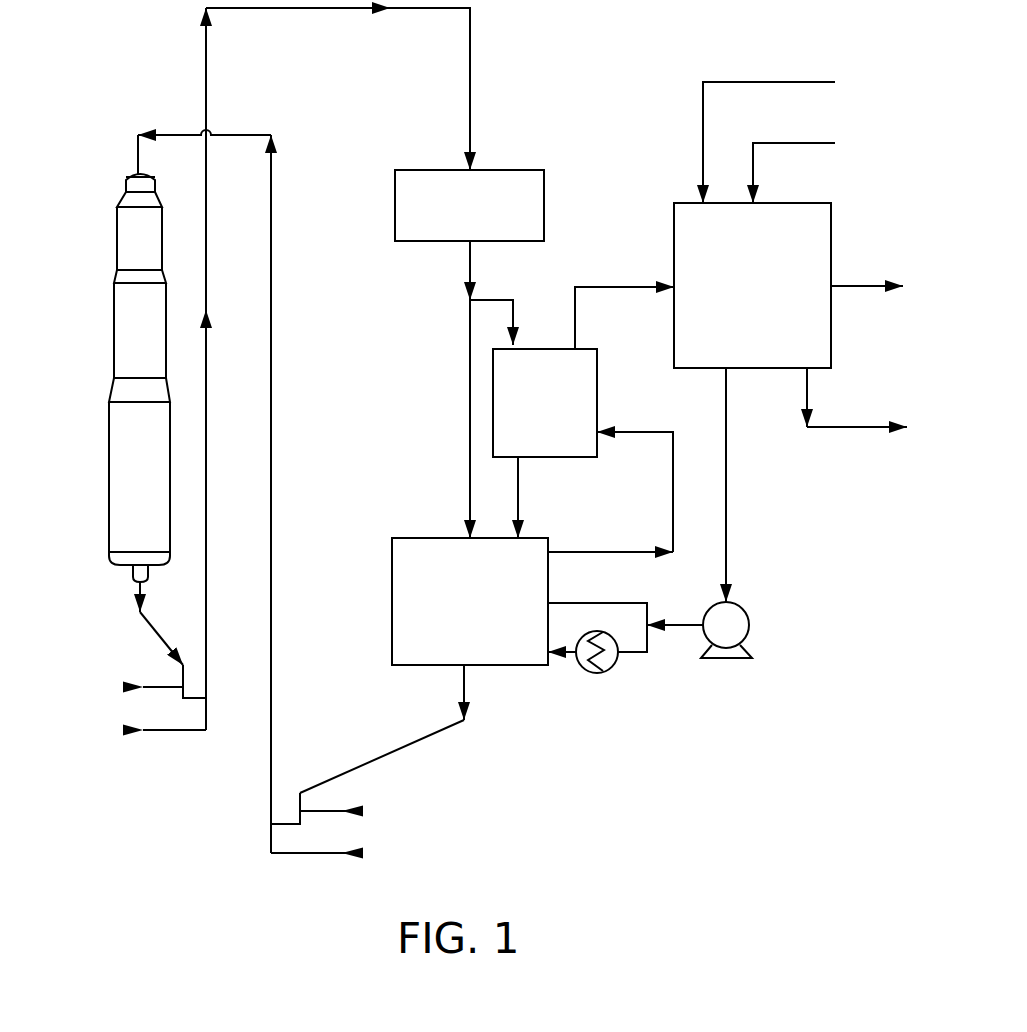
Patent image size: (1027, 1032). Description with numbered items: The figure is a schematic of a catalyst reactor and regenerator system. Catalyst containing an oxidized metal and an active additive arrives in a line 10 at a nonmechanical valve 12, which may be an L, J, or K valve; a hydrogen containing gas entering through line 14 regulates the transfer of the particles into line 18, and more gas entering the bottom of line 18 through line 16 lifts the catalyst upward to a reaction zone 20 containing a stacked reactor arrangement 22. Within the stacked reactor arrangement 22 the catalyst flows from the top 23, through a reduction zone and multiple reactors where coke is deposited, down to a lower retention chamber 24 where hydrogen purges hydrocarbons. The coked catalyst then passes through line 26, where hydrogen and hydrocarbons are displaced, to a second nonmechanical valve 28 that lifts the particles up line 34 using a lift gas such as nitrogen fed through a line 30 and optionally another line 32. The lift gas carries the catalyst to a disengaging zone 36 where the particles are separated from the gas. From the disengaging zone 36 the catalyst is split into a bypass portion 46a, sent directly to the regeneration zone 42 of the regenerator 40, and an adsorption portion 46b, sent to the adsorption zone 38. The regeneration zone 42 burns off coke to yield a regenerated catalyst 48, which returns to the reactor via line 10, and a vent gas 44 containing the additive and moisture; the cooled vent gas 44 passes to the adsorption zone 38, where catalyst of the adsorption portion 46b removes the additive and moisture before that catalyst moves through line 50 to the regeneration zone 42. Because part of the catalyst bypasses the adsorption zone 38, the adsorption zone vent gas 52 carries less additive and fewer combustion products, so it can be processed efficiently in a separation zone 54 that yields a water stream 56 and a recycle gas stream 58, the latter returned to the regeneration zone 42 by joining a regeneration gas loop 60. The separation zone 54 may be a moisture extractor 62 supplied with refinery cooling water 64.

The line 10 is at (423, 742).
The nonmechanical valve 12 is at (260, 827).
The line 14 is at (328, 808).
The line 16 is at (323, 852).
The line 18 is at (177, 132).
The reaction zone 20 is at (107, 128).
The stacked reactor arrangement 22 is at (114, 331).
The top 23 is at (132, 172).
The lower retention chamber 24 is at (133, 573).
The line 26 is at (152, 626).
The nonmechanical valve 28 is at (190, 742).
The line 30 is at (160, 686).
The line 32 is at (155, 729).
The line 34 is at (205, 50).
The disengaging zone 36 is at (413, 168).
The adsorption zone 38 is at (597, 360).
The regenerator 40 is at (578, 93).
The regeneration zone 42 is at (396, 537).
The vent gas 44 is at (618, 552).
The bypass portion 46a is at (468, 340).
The adsorption portion 46b is at (513, 300).
The regenerated catalyst 48 is at (465, 688).
The line 50 is at (518, 482).
The adsorption zone vent gas 52 is at (625, 287).
The separation zone 54 is at (855, 120).
The water stream 56 is at (857, 428).
The recycle gas stream 58 is at (727, 485).
The regeneration gas loop 60 is at (650, 643).
The moisture extractor 62 is at (813, 203).
The refinery cooling water 64 is at (772, 82).